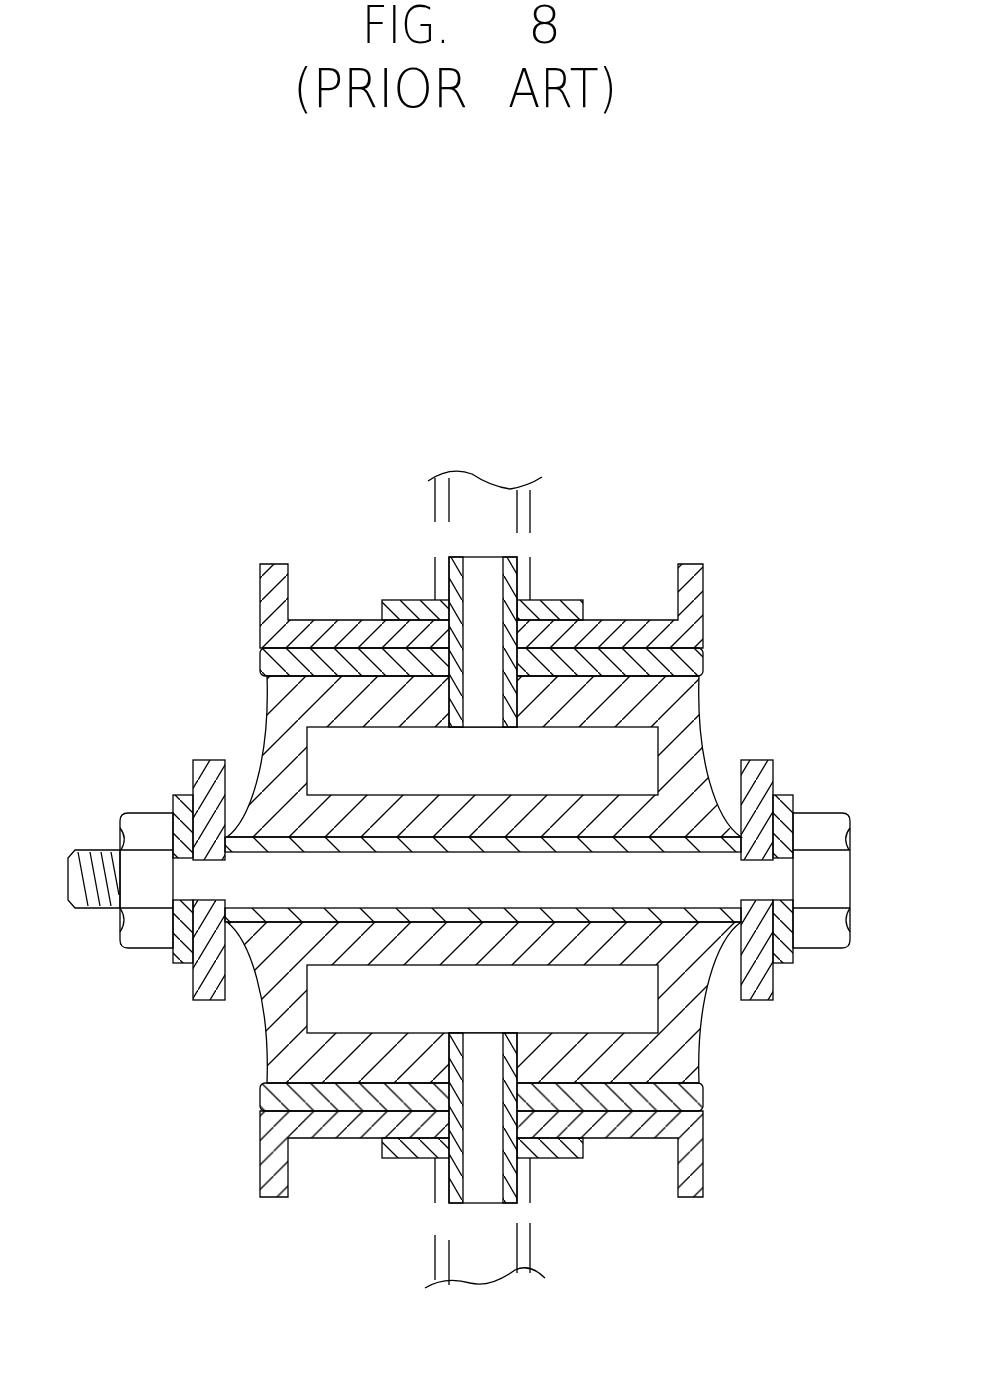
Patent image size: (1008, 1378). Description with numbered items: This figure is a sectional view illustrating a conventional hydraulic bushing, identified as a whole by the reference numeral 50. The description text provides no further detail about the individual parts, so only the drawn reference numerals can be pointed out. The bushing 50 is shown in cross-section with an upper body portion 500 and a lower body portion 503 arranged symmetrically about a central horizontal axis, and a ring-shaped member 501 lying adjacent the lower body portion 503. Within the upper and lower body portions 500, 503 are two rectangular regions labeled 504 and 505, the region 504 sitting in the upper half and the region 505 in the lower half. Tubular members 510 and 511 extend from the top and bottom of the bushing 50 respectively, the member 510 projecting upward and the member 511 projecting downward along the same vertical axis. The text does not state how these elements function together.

The prior art hub assembly 50 is at (212, 478).
The upper hub body 500 is at (663, 840).
The flange ring 501 is at (690, 1098).
The lower hub body 503 is at (694, 1058).
The upper magnet 504 is at (318, 760).
The lower magnet 505 is at (323, 1017).
The upper tube 510 is at (435, 497).
The lower tube 511 is at (528, 1247).